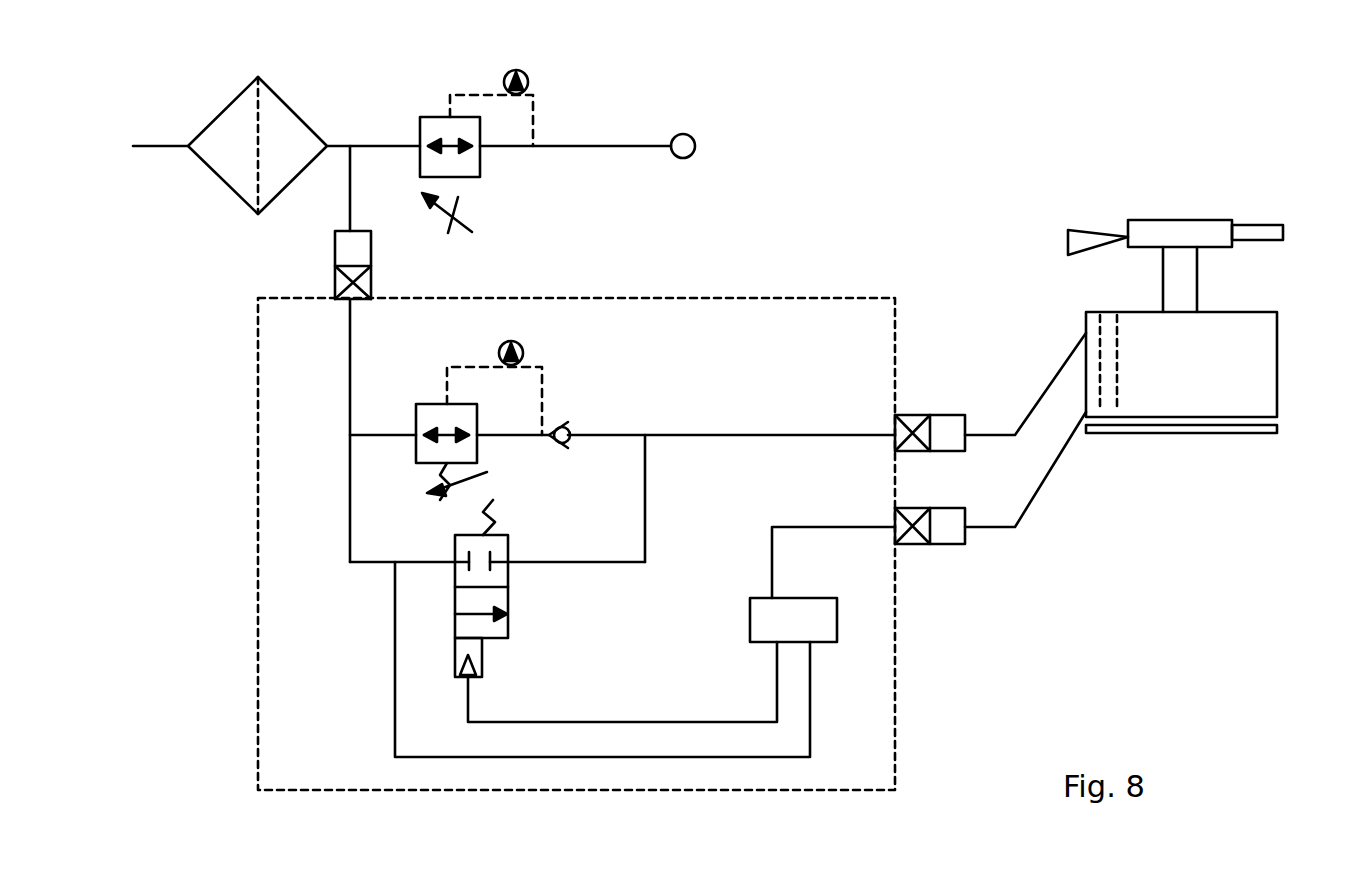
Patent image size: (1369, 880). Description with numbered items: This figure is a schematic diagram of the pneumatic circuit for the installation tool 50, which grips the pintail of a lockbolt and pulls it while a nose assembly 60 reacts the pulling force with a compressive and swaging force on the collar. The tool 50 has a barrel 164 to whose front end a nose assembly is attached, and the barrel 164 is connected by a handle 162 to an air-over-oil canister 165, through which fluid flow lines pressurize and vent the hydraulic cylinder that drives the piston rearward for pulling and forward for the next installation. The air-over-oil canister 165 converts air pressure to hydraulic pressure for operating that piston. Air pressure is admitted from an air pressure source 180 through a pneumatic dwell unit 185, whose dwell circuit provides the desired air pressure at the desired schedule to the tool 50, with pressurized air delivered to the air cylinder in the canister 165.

The installation tool 50 is at (1141, 297).
The nose assembly 60 is at (1103, 196).
The handle 162 is at (1197, 280).
The barrel 164 is at (1152, 220).
The air-over-oil canister 165 is at (1277, 367).
The air pressure source 180 is at (696, 140).
The pneumatic dwell unit 185 is at (895, 692).